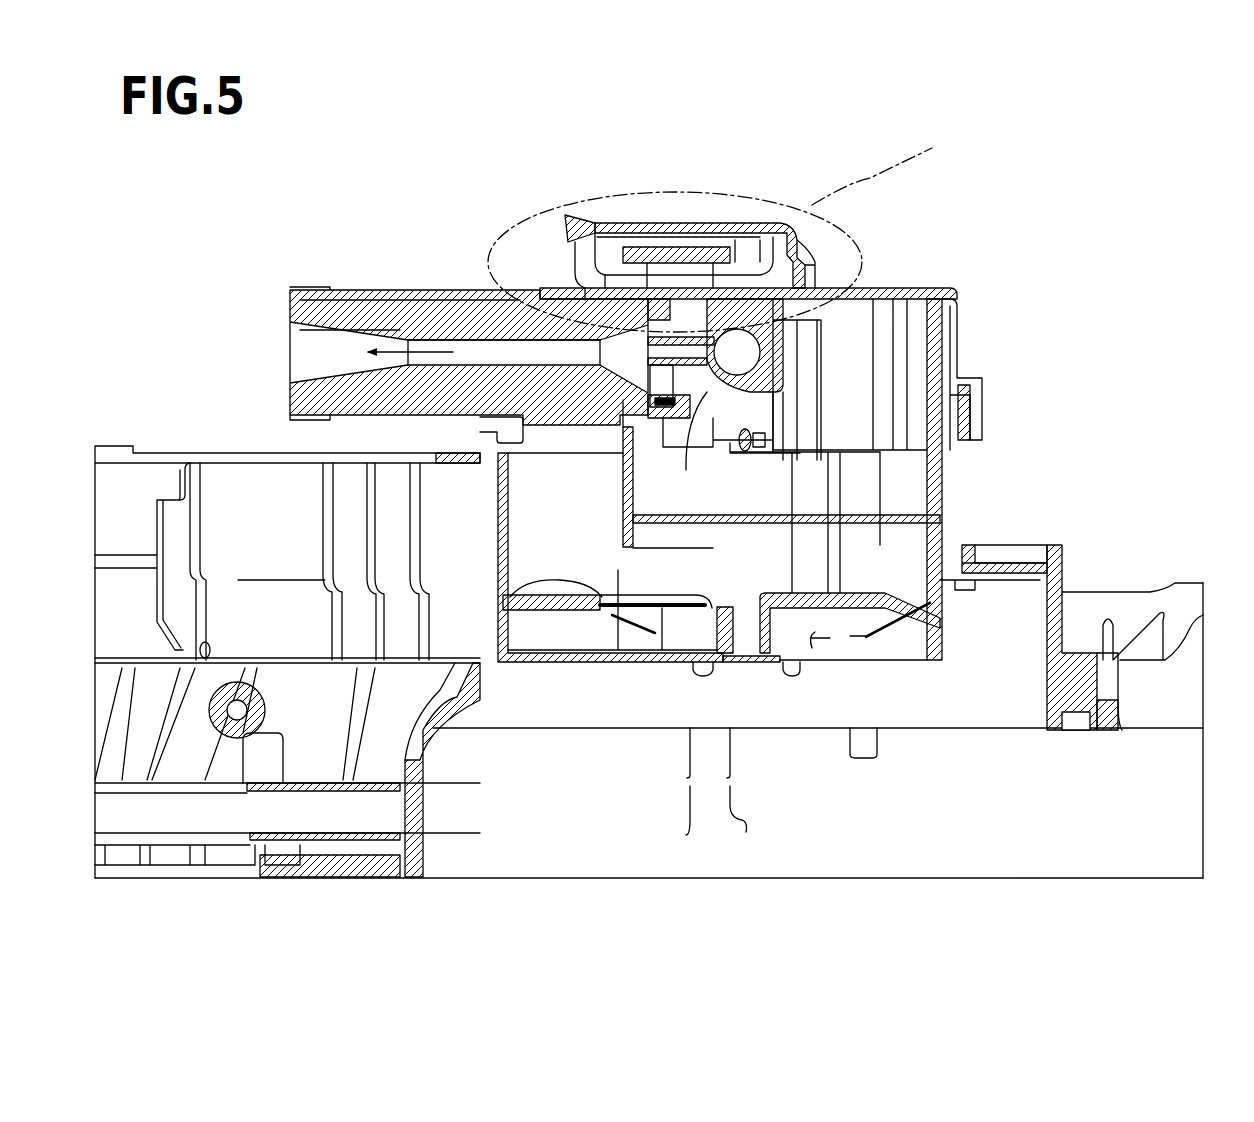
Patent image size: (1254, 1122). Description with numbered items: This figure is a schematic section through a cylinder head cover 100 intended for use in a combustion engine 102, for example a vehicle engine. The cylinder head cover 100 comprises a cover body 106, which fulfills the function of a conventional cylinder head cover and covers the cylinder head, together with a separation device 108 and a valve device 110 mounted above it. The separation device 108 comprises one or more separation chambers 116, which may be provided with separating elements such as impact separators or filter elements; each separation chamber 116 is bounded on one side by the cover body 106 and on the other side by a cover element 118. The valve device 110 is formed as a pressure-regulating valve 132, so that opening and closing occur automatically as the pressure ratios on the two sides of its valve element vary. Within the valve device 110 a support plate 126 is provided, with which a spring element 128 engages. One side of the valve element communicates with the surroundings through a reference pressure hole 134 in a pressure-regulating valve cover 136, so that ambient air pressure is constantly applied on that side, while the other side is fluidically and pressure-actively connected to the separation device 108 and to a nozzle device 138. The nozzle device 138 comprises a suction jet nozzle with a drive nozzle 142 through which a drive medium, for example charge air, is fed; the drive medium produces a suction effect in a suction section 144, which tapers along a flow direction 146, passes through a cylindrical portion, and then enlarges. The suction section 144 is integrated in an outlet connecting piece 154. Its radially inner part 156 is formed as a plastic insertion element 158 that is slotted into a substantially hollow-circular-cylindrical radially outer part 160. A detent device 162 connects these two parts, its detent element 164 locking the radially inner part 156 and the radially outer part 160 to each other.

The cylinder head cover 100 is at (1058, 188).
The combustion engine 102 is at (1155, 225).
The cover body 106 is at (1065, 560).
The separation device 108 is at (975, 425).
The valve device 110 is at (660, 195).
The separation chamber 116 is at (905, 490).
The cover element 118 is at (900, 290).
The support plate 126 is at (652, 332).
The spring element 128 is at (790, 300).
The pressure-regulating valve 132 is at (745, 205).
The reference pressure hole 134 is at (557, 230).
The pressure-regulating valve cover 136 is at (795, 240).
The nozzle device 138 is at (605, 290).
The drive nozzle 142 is at (690, 325).
The suction section 144 is at (468, 325).
The flow direction 146 is at (432, 340).
The outlet connecting piece 154 is at (295, 283).
The radially inner part 156 is at (345, 320).
The insertion element 158 is at (505, 325).
The radially outer part 160 is at (395, 318).
The detent device 162 is at (615, 485).
The detent element 164 is at (665, 440).